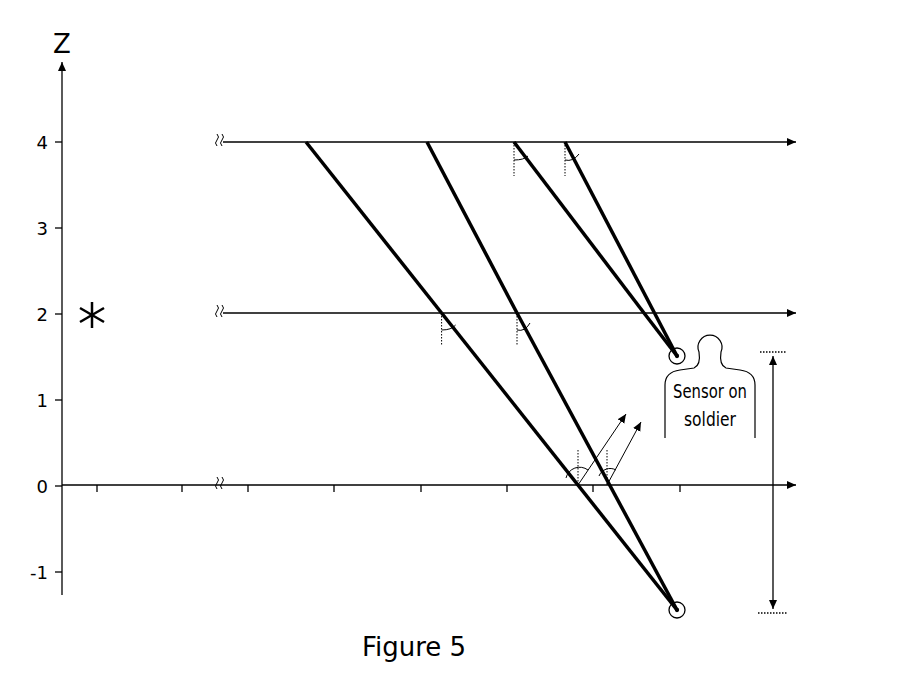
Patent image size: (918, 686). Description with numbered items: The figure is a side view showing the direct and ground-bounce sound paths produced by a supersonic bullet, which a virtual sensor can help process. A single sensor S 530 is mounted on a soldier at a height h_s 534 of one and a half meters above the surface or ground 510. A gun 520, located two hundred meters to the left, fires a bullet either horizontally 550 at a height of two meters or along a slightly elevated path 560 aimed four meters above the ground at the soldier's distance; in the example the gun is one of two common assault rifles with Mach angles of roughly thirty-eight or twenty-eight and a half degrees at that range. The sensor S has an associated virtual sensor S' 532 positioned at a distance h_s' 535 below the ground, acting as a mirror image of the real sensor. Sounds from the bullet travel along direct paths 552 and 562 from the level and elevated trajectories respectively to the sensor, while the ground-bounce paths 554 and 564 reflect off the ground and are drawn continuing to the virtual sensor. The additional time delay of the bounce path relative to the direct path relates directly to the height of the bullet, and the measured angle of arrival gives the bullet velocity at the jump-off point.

The surface/ground 510 is at (445, 490).
The gun 520 is at (116, 315).
The sensor S 530 is at (667, 358).
The virtual sensor S' 532 is at (667, 611).
The sensor height h_s 534 is at (777, 391).
The virtual sensor distance h_s' 535 is at (777, 581).
The horizontal bullet path 550 is at (506, 302).
The elevated bullet path 560 is at (506, 131).
The direct sound path from level trajectory 552 is at (657, 333).
The ground-bounce sound path from level trajectory 554 is at (559, 400).
The direct sound path from elevated trajectory 562 is at (600, 241).
The ground-bounce sound path from elevated trajectory 564 is at (476, 248).